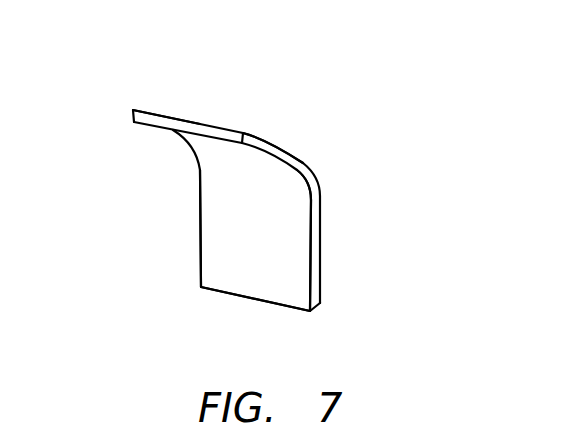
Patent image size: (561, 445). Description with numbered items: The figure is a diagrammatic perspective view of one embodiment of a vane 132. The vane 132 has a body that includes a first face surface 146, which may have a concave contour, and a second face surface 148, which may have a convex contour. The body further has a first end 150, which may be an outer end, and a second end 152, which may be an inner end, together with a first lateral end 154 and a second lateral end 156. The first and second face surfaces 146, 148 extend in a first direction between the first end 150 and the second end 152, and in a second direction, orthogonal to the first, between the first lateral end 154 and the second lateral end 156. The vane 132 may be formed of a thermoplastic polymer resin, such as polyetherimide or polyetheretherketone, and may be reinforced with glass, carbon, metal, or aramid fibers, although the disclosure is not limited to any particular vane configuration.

The vane 132 is at (115, 178).
The first end 150 is at (200, 121).
The second face surface 148 is at (270, 138).
The first face surface 146 is at (262, 160).
The first lateral end 154 is at (200, 235).
The second lateral end 156 is at (315, 270).
The second end 152 is at (240, 295).